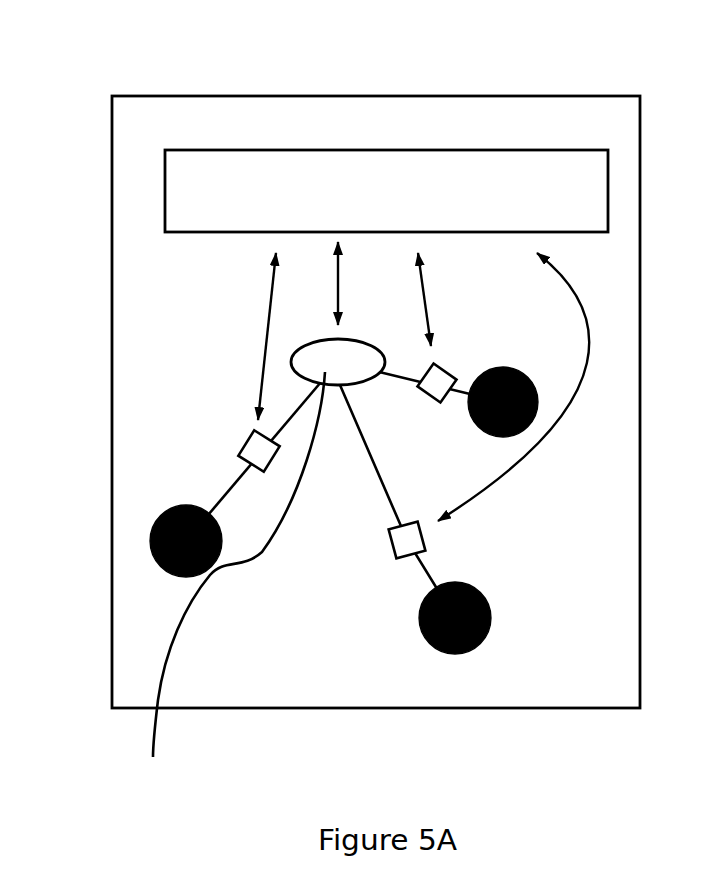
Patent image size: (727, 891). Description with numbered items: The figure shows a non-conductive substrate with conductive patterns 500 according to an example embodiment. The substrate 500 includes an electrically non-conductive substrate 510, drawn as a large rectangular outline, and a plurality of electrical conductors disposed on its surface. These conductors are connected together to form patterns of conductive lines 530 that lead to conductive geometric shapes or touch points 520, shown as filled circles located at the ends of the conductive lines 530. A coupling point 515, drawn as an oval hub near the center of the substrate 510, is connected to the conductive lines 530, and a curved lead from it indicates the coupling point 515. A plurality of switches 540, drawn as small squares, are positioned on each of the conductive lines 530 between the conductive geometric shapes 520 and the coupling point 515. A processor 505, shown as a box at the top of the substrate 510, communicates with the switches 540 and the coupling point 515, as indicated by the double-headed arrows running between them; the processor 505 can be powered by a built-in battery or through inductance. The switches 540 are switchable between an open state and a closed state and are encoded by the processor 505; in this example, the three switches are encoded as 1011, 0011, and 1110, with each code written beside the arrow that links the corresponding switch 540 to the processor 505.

The non-conductive substrate with conductive patterns 500 is at (275, 50).
The processor 505 is at (363, 224).
The electrically non-conductive substrate 510 is at (152, 107).
The coupling point 515 is at (230, 585).
The conductive geometric shapes or touch points 520 is at (136, 535).
The conductive lines 530 is at (198, 481).
The switches 540 is at (248, 448).
The switch encoding "1011" 1011 is at (244, 336).
The switch encoding "0011" 0011 is at (450, 299).
The switch encoding "1110" 1110 is at (527, 387).